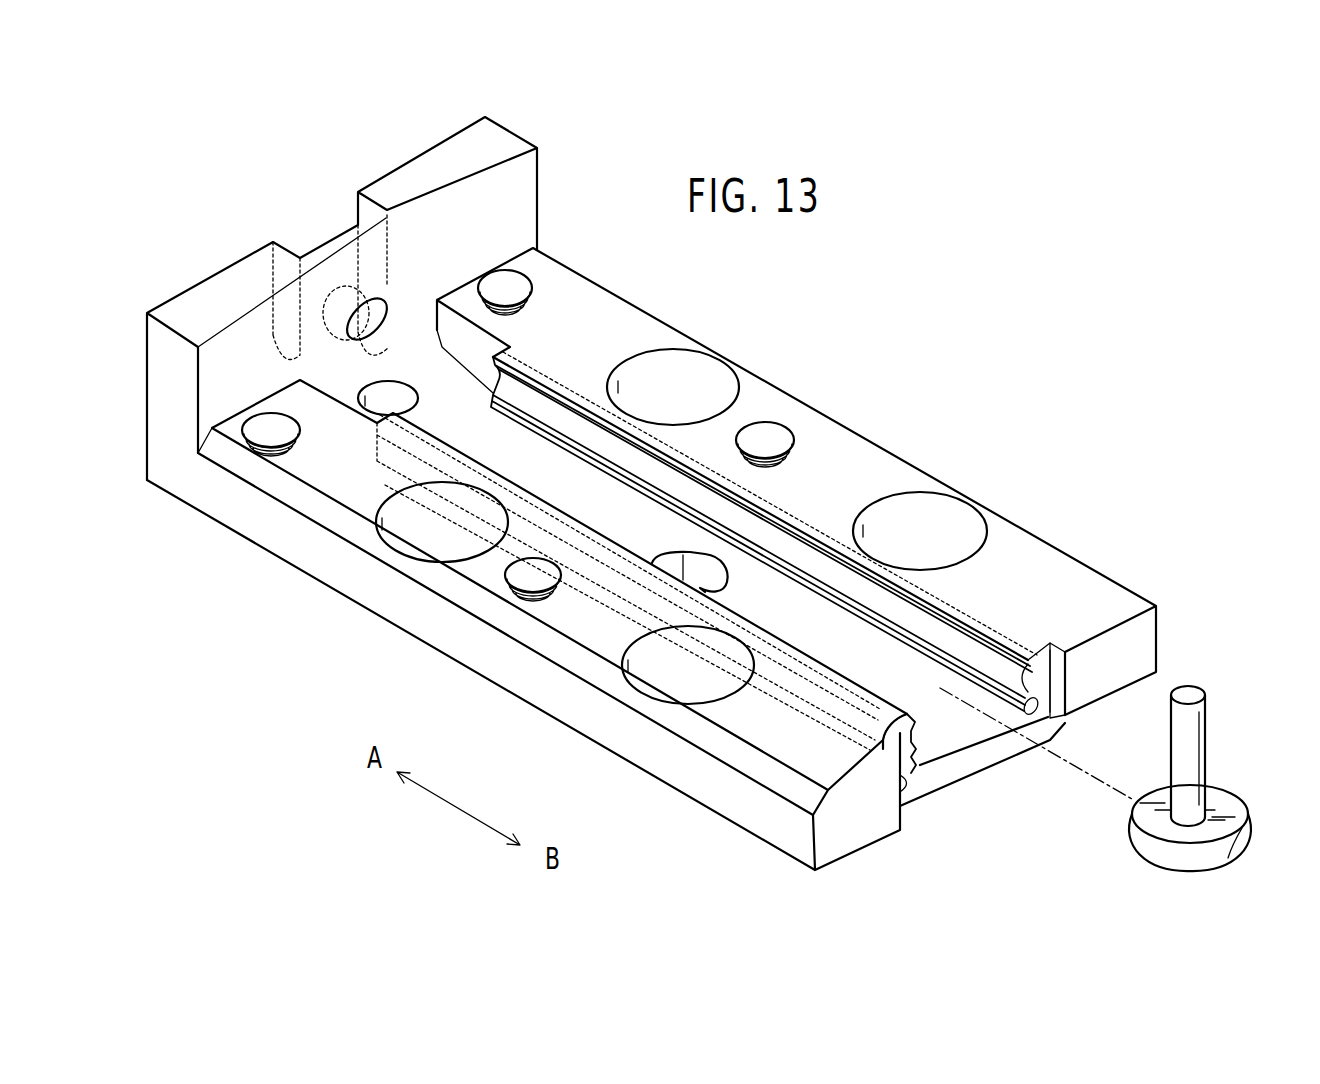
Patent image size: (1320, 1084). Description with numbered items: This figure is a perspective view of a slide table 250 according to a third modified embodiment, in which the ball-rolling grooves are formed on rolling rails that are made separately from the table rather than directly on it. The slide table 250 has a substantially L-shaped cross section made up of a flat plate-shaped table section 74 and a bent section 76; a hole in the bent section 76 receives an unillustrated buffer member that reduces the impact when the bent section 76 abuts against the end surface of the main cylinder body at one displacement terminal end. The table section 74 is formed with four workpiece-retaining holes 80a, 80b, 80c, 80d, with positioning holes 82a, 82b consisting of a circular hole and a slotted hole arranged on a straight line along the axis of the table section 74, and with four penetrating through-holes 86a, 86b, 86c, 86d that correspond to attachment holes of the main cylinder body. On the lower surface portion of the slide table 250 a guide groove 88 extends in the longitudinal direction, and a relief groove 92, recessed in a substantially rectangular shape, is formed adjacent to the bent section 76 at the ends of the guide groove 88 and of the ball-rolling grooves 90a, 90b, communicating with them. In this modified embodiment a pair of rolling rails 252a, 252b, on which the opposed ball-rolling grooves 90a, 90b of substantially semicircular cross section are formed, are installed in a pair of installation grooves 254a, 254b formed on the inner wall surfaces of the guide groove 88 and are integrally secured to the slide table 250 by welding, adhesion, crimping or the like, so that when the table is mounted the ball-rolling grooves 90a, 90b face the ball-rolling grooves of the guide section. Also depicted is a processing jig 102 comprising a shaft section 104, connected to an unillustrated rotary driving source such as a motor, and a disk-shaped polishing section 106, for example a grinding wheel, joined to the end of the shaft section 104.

The bent section 76 is at (433, 165).
The table section 74 is at (1090, 622).
The slide table 250 is at (328, 609).
The guide groove 88 is at (953, 728).
The ball-rolling groove 90a is at (953, 640).
The ball-rolling groove 90b is at (924, 740).
The relief groove 92 is at (431, 354).
The workpiece-retaining hole 80a is at (773, 440).
The workpiece-retaining hole 80b is at (533, 592).
The workpiece-retaining hole 80c is at (505, 295).
The workpiece-retaining hole 80d is at (272, 447).
The positioning hole 82a is at (412, 401).
The positioning hole 82b is at (668, 560).
The penetrating through-hole 86a is at (912, 522).
The penetrating through-hole 86b is at (697, 680).
The penetrating through-hole 86c is at (673, 375).
The penetrating through-hole 86d is at (432, 540).
The rolling rail 252a is at (1049, 690).
The rolling rail 252b is at (909, 775).
The installation groove 254a is at (1018, 652).
The installation groove 254b is at (882, 732).
The processing jig 102 is at (1153, 812).
The shaft section 104 is at (1177, 738).
The polishing section 106 is at (1138, 850).